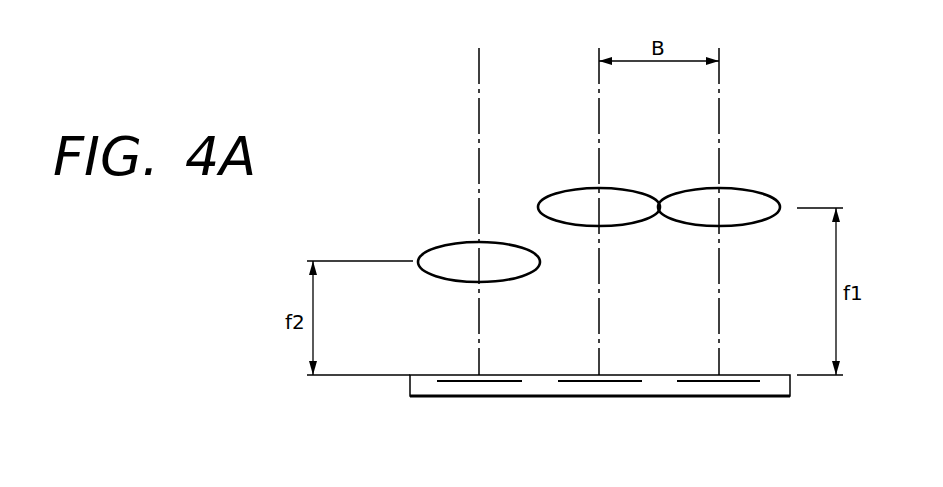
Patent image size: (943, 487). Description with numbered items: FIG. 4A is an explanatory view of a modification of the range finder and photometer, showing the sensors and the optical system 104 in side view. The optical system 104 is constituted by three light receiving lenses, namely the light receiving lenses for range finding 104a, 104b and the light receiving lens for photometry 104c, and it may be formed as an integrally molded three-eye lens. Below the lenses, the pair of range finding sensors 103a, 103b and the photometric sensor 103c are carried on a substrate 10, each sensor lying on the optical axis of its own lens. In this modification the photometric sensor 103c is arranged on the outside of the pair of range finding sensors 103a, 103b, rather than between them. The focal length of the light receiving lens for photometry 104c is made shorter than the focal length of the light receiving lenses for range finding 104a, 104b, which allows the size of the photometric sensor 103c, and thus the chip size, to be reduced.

The substrate 10 is at (753, 397).
The range finding sensor 103a is at (707, 381).
The range finding sensor 103b is at (586, 381).
The photometric sensor 103c is at (460, 381).
The optical system 104 is at (380, 138).
The light receiving lens for range finding 104a is at (737, 187).
The light receiving lens for range finding 104b is at (622, 187).
The light receiving lens for photometry 104c is at (447, 244).